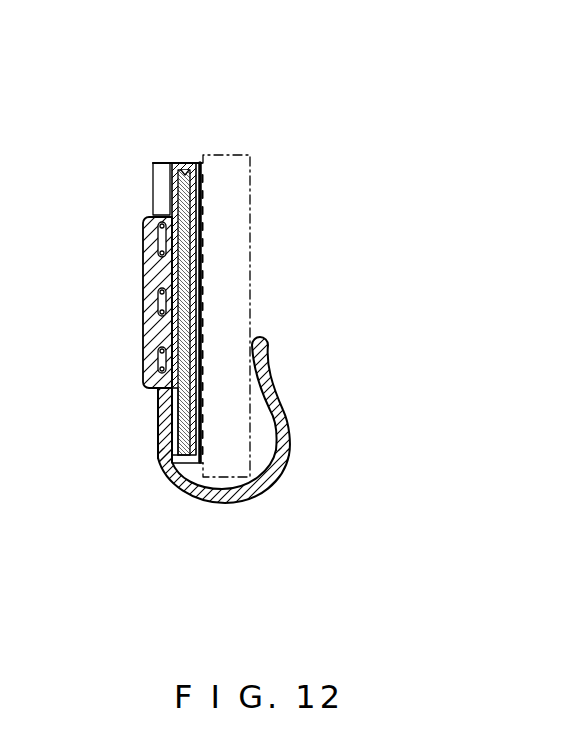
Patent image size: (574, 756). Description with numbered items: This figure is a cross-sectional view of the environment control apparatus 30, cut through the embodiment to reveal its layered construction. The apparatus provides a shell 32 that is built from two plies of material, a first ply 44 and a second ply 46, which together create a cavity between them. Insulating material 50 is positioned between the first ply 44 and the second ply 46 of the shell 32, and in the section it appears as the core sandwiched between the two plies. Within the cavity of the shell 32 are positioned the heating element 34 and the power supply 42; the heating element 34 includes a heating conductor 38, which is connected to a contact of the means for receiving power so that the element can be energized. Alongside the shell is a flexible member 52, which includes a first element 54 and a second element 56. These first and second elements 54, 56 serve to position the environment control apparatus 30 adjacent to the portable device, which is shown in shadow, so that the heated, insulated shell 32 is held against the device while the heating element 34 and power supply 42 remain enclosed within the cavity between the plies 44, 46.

The environment control apparatus 30 is at (390, 200).
The shell 32 is at (185, 152).
The heating element 34 is at (143, 265).
The heating conductor 38 is at (160, 358).
The power supply 42 is at (153, 212).
The first ply 44 is at (175, 162).
The second ply 46 is at (197, 162).
The insulating material 50 is at (203, 247).
The flexible member 52 is at (225, 512).
The first element 54 is at (268, 381).
The second element 56 is at (158, 440).